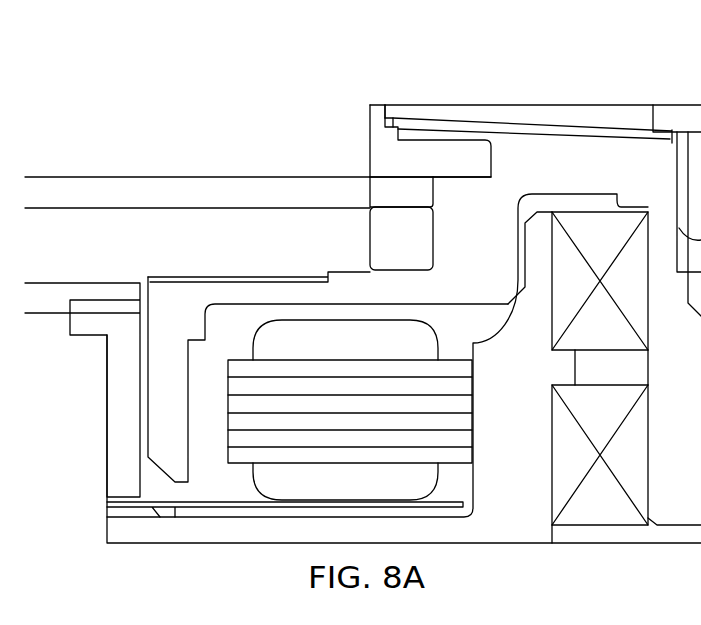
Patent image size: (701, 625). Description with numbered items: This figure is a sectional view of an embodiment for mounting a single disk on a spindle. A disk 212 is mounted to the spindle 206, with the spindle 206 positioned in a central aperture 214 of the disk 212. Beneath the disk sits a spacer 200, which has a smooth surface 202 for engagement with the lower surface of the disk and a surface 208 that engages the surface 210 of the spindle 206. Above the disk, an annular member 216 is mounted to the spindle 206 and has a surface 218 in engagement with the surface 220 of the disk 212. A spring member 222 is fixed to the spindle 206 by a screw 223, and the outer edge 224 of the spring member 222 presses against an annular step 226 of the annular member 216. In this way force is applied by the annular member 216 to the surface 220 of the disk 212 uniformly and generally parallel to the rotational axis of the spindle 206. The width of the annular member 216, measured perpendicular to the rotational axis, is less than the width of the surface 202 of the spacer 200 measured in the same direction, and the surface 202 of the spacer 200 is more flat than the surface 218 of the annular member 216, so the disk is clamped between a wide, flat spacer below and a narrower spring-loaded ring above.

The spacer 200 is at (420, 250).
The smooth surface 202 is at (387, 200).
The spindle 206 is at (631, 181).
The surface 208 is at (433, 208).
The surface 210 is at (372, 263).
The disk 212 is at (153, 187).
The central aperture 214 is at (435, 193).
The annular member 216 is at (378, 145).
The surface 218 is at (387, 178).
The surface 220 is at (408, 173).
The spring member 222 is at (537, 128).
The screw 223 is at (673, 115).
The outer edge 224 is at (390, 105).
The annular step 226 is at (390, 122).